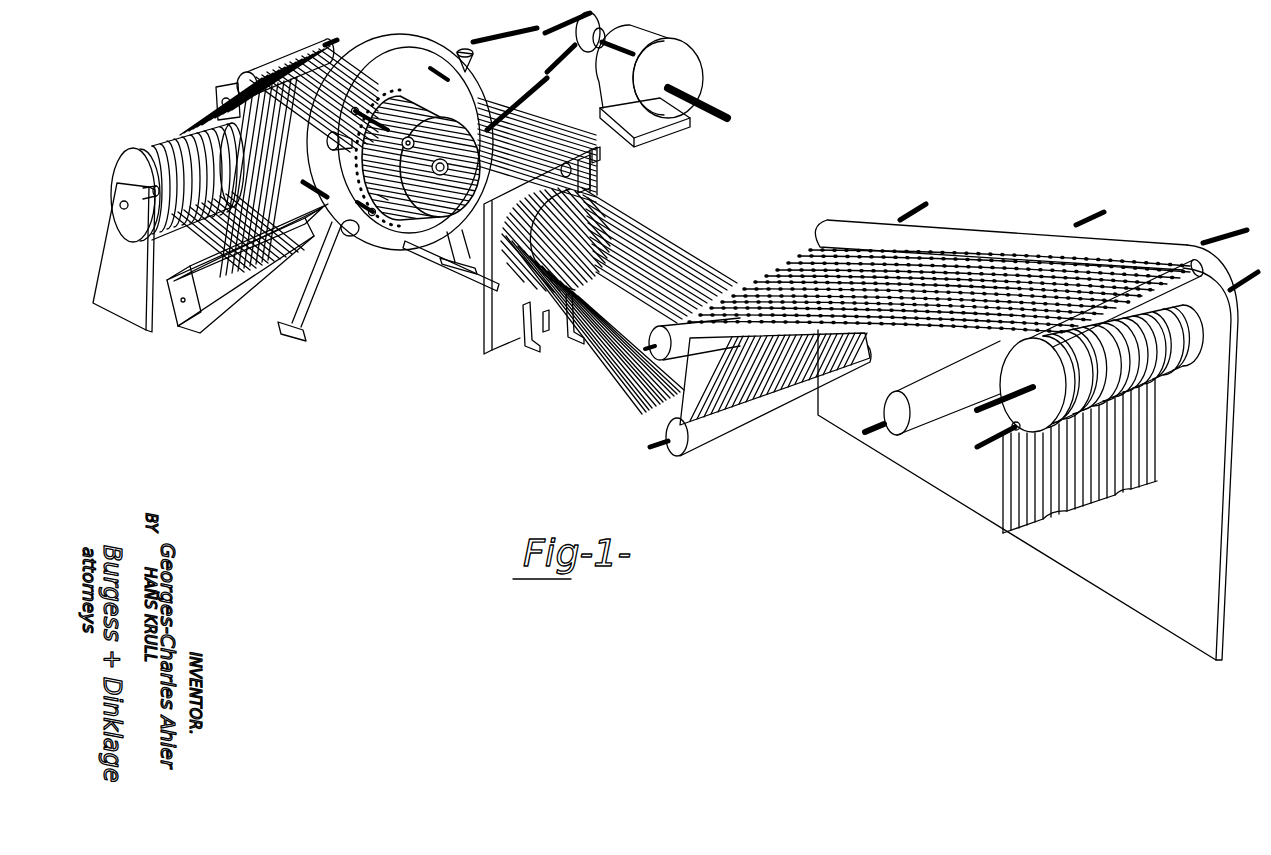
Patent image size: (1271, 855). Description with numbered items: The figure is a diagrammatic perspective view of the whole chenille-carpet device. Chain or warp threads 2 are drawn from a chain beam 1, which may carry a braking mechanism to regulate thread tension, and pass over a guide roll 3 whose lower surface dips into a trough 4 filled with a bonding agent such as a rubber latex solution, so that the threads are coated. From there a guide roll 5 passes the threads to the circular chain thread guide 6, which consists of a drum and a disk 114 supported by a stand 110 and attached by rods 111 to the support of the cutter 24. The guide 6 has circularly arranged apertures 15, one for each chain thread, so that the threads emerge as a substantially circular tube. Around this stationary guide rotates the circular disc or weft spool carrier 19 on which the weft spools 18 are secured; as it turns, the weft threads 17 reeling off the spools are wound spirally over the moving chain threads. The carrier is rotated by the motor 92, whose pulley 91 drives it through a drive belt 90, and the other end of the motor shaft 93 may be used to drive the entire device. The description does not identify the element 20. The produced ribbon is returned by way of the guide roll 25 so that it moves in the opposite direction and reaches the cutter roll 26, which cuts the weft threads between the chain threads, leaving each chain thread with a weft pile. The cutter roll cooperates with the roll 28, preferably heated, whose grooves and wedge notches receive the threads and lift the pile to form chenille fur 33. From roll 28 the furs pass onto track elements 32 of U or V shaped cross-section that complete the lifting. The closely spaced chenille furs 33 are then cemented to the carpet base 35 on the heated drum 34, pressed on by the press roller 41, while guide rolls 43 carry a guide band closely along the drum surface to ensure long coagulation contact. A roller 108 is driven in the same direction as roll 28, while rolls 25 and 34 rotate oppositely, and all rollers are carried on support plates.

The chain beam 1 is at (139, 154).
The chain or warp threads 2 is at (180, 249).
The guide roll 3 is at (240, 300).
The trough 4 is at (190, 325).
The guide roll 5 is at (322, 46).
The circular chain thread guide 6 is at (383, 200).
The apertures 15 is at (398, 92).
The weft threads 17 is at (466, 114).
The weft spools 18 is at (464, 50).
The circular disc (weft spool carrier) 19 is at (486, 70).
The pin 20 is at (443, 68).
The cutter 24 is at (600, 168).
The guide roll 25 is at (670, 452).
The cutter roll 26 is at (640, 393).
The roll 28 is at (618, 364).
The track elements 32 is at (998, 256).
The chenille fur 33 is at (912, 256).
The drum 34 is at (1054, 421).
The carpet base 35 is at (957, 356).
The press roller 41 is at (1182, 272).
The guide rolls 43 is at (975, 445).
The drive belt 90 is at (531, 27).
The pulley 91 is at (590, 45).
The motor 92 is at (676, 40).
The motor shaft 93 is at (722, 105).
The roller 108 is at (872, 417).
The stand 110 is at (311, 316).
The rods 111 is at (471, 297).
The disk 114 is at (369, 158).